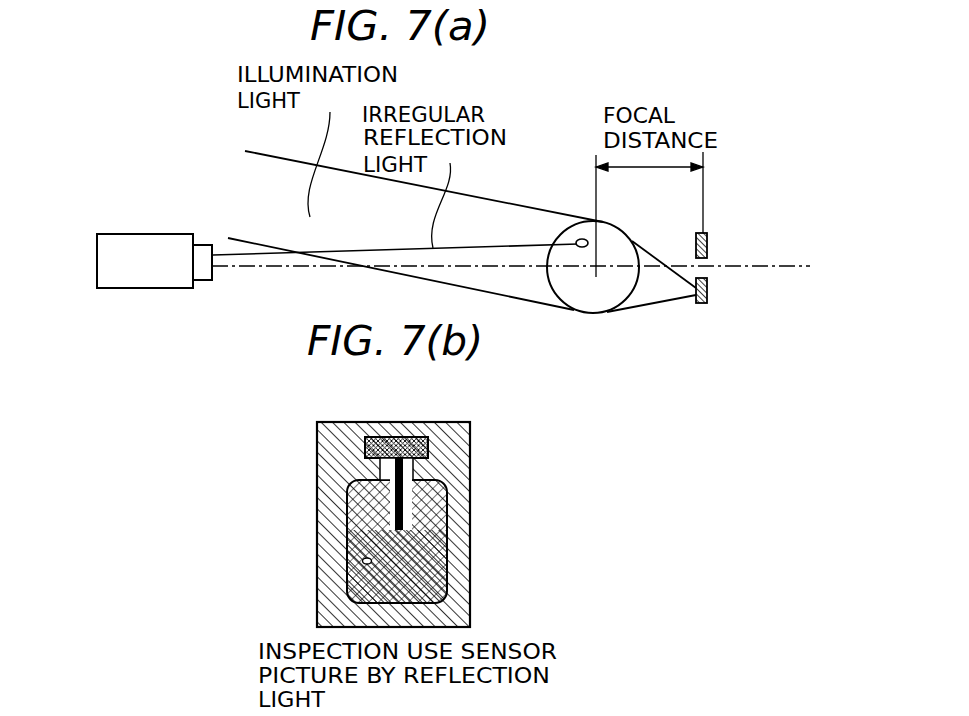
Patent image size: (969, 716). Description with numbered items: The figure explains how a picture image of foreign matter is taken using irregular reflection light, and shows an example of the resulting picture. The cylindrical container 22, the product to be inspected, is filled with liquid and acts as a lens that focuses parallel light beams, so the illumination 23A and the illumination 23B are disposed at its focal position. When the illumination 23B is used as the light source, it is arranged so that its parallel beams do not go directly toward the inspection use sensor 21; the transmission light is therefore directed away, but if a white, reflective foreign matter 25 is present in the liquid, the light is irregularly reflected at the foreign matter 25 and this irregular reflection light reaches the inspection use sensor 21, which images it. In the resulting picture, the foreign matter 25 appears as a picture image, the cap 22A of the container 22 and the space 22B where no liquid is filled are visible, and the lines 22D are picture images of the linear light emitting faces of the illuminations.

In FIG. 7A, the inspection use sensor 21 is at (128, 247).
In FIG. 7A, the cylindrical container 22 is at (613, 314).
In FIG. 7B, the cylindrical container 22 is at (311, 501).
In FIG. 7B, the cap 22A is at (445, 438).
In FIG. 7B, the space 22B is at (432, 501).
In FIG. 7B, the lines 22D is at (394, 523).
In FIG. 7A, the illumination 23A is at (708, 258).
In FIG. 7A, the illumination 23B is at (728, 322).
In FIG. 7A, the foreign matter 25 is at (567, 236).
In FIG. 7B, the foreign matter 25 is at (262, 572).